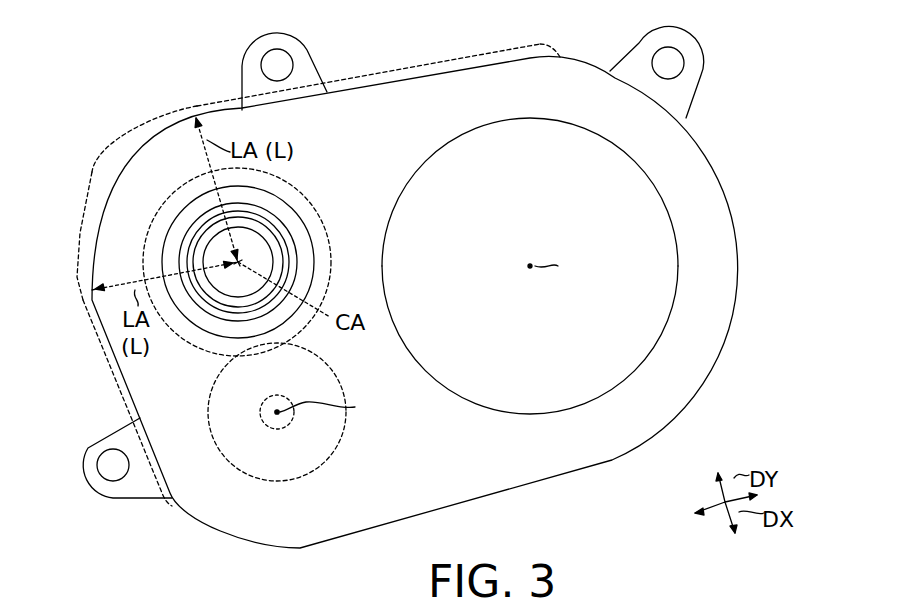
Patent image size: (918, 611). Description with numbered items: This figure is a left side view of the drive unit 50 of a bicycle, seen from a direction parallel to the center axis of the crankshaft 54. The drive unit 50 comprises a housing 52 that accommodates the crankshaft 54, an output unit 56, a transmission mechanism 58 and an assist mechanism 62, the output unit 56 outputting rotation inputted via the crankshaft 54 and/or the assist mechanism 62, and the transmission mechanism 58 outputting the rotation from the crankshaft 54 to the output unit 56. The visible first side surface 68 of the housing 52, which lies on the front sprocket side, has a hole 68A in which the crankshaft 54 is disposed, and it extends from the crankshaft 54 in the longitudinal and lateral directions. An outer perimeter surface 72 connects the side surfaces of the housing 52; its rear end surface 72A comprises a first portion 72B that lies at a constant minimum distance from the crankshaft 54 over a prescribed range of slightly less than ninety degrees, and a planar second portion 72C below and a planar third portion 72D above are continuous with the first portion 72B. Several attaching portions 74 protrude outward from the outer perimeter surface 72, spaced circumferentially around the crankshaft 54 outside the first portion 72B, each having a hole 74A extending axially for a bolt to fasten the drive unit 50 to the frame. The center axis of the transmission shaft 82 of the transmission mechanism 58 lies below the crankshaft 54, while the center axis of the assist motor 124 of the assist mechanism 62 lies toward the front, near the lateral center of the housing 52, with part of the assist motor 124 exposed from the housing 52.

The drive unit 50 is at (443, 284).
The housing 52 is at (709, 153).
The crankshaft 54 is at (300, 236).
The output unit 56 is at (190, 308).
The transmission mechanism 58 is at (258, 483).
The assist mechanism 62 is at (588, 123).
The first side surface 68 is at (560, 57).
The hole 68A is at (278, 205).
The outer perimeter surface 72 is at (324, 260).
The rear end surface 72A is at (133, 123).
The first portion 72B is at (92, 166).
The second portion 72C is at (117, 392).
The third portion 72D is at (378, 68).
The attaching portions 74 is at (258, 43).
The hole 74A is at (267, 63).
The transmission shaft 82 is at (276, 411).
The assist motor 124 is at (457, 393).